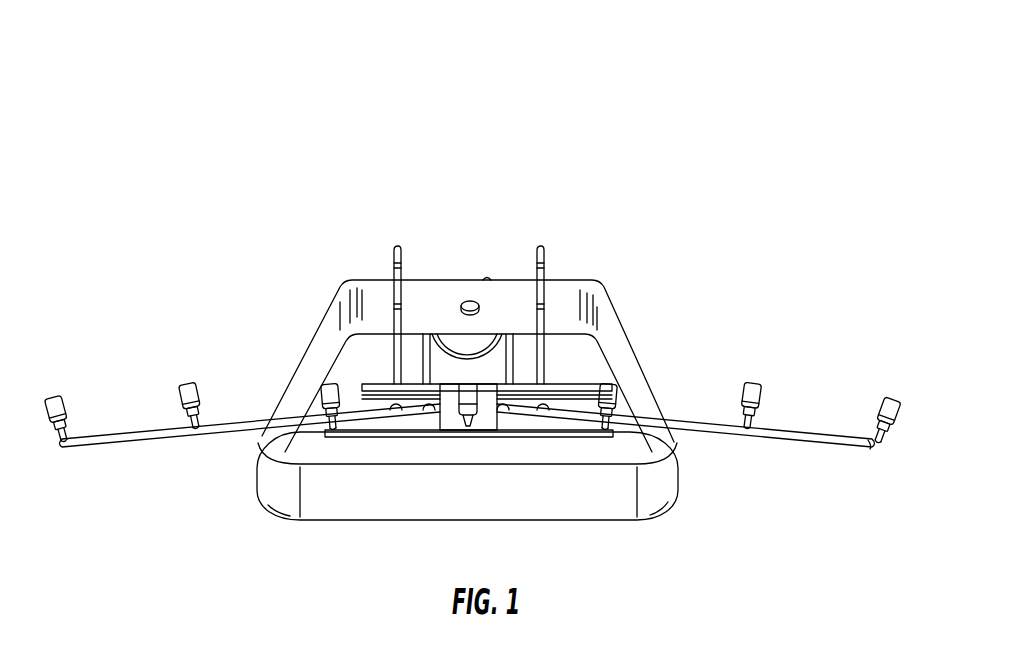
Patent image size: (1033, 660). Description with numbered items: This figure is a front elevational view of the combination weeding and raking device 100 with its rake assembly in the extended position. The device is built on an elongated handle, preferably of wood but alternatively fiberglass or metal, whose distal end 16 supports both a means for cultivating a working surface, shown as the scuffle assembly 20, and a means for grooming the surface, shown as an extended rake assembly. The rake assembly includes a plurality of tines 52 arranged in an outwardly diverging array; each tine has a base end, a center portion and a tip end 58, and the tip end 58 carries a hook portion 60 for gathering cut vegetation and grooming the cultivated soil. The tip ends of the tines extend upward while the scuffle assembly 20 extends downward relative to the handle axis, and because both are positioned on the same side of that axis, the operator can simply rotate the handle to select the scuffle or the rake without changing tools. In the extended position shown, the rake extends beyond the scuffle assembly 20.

The combination weeding and raking device 100 is at (651, 123).
The distal end 16 is at (452, 345).
The scuffle assembly 20 is at (620, 323).
The tines 52 is at (783, 440).
The tip end 58 is at (889, 400).
The hook portion 60 is at (877, 446).